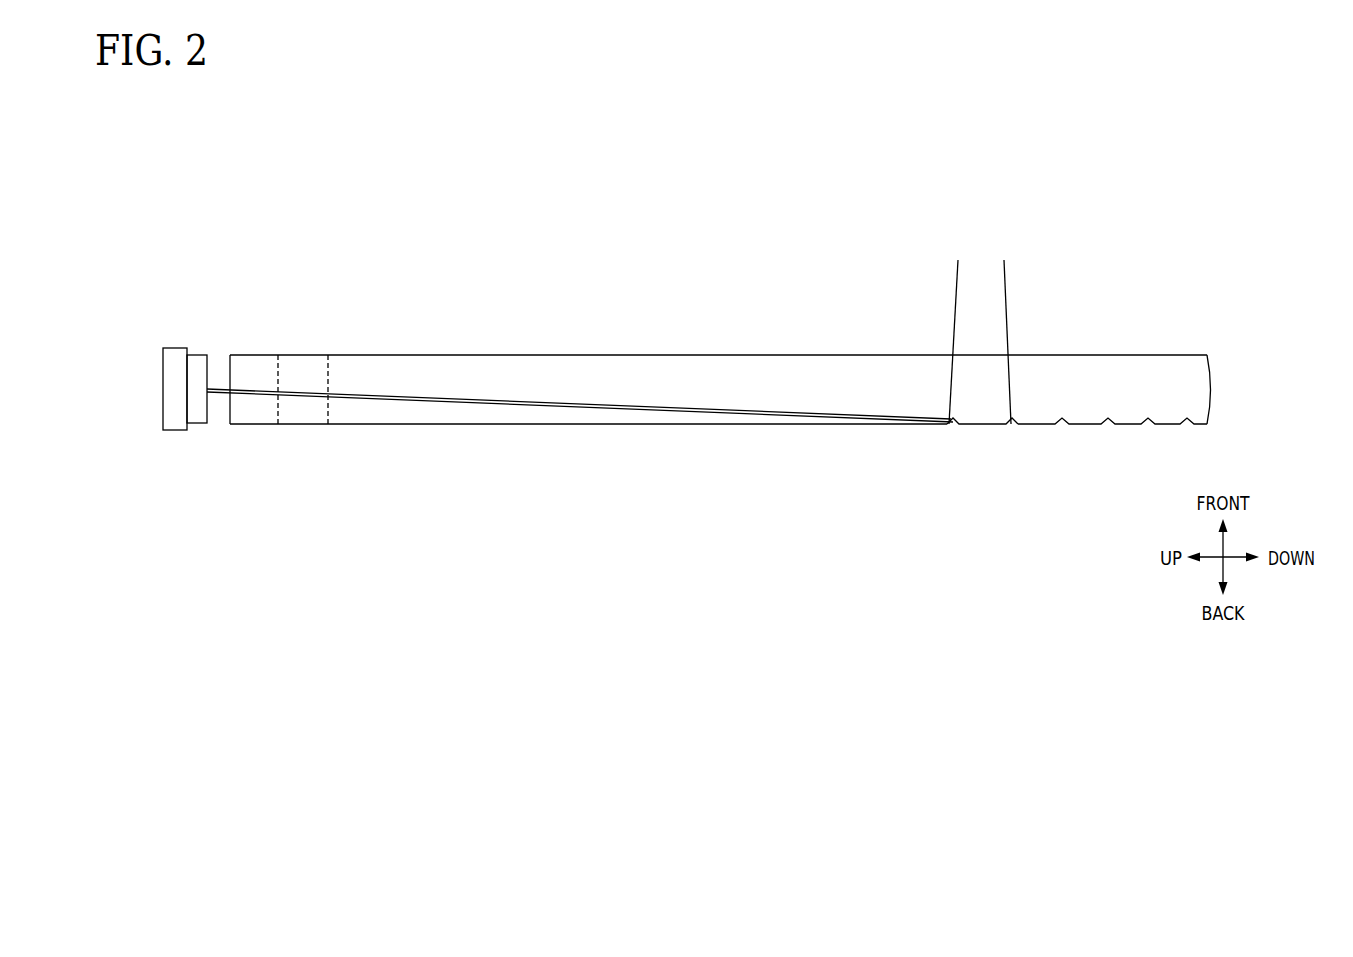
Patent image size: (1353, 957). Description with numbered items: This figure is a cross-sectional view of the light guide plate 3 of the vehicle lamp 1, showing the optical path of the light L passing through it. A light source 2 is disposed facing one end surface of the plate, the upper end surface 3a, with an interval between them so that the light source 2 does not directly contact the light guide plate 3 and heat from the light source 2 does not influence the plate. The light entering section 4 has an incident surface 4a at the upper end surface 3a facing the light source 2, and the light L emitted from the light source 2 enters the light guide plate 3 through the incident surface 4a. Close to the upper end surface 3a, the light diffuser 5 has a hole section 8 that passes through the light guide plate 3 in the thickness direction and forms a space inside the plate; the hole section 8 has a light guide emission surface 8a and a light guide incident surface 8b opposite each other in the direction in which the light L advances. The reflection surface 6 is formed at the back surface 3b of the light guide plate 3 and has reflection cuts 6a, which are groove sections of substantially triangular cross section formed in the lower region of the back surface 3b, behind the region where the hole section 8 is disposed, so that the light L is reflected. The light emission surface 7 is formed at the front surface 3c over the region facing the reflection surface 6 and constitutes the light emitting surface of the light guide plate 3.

The vehicle lamp 1 is at (977, 200).
The light source 2 is at (163, 388).
The light guide plate 3 is at (748, 434).
The upper end surface 3a is at (228, 416).
The back surface 3b is at (545, 427).
The front surface 3c is at (537, 355).
The light entering section 4 is at (579, 351).
The incident surface 4a is at (232, 386).
The light diffuser 5 is at (308, 325).
The reflection surface 6 is at (1037, 428).
The reflection cut 6a is at (1011, 428).
The light emission surface 7 is at (1107, 355).
The hole section 8 is at (320, 345).
The light guide emission surface 8a is at (280, 408).
The light guide incident surface 8b is at (327, 408).
The light L is at (1007, 297).